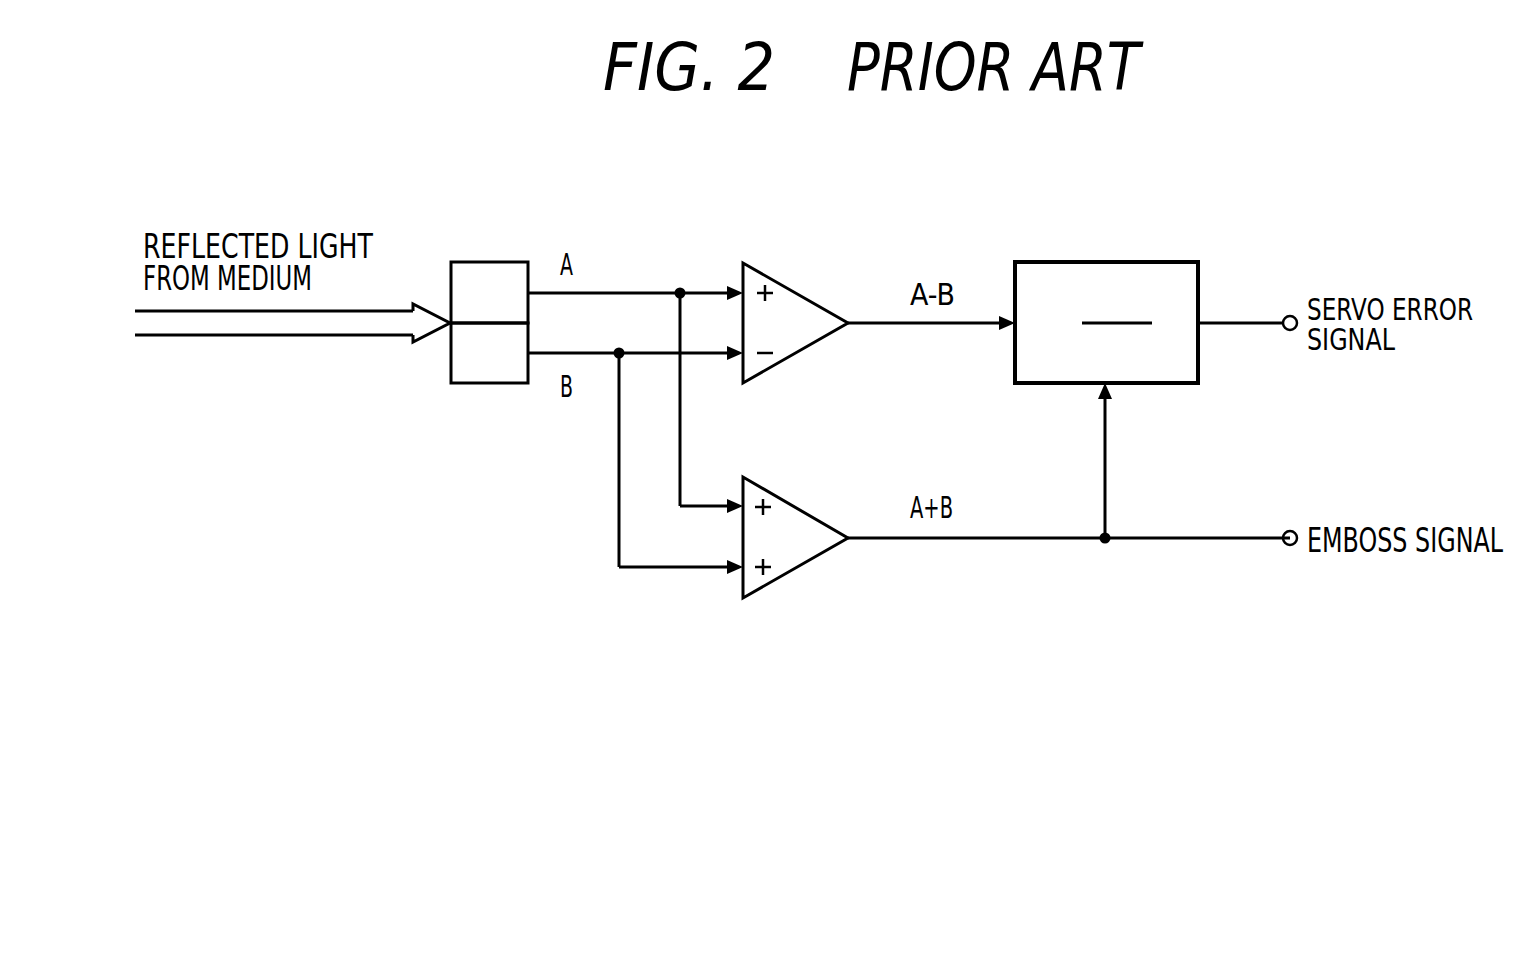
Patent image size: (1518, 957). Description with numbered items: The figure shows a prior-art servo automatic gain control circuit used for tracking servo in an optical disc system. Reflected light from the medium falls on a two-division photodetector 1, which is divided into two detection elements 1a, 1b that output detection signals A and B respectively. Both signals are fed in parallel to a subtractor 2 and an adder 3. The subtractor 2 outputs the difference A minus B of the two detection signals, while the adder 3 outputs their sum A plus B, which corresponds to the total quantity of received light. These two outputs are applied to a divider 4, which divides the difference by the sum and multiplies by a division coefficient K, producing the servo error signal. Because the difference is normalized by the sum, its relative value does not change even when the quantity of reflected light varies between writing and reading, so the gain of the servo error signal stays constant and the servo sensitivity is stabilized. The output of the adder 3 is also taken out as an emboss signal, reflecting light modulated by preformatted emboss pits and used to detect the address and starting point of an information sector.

The two-division photodetector 1 is at (476, 315).
The detection element 1a is at (475, 267).
The detection element 1b is at (467, 374).
The subtractor 2 is at (810, 297).
The adder 3 is at (810, 512).
The divider 4 is at (1147, 260).